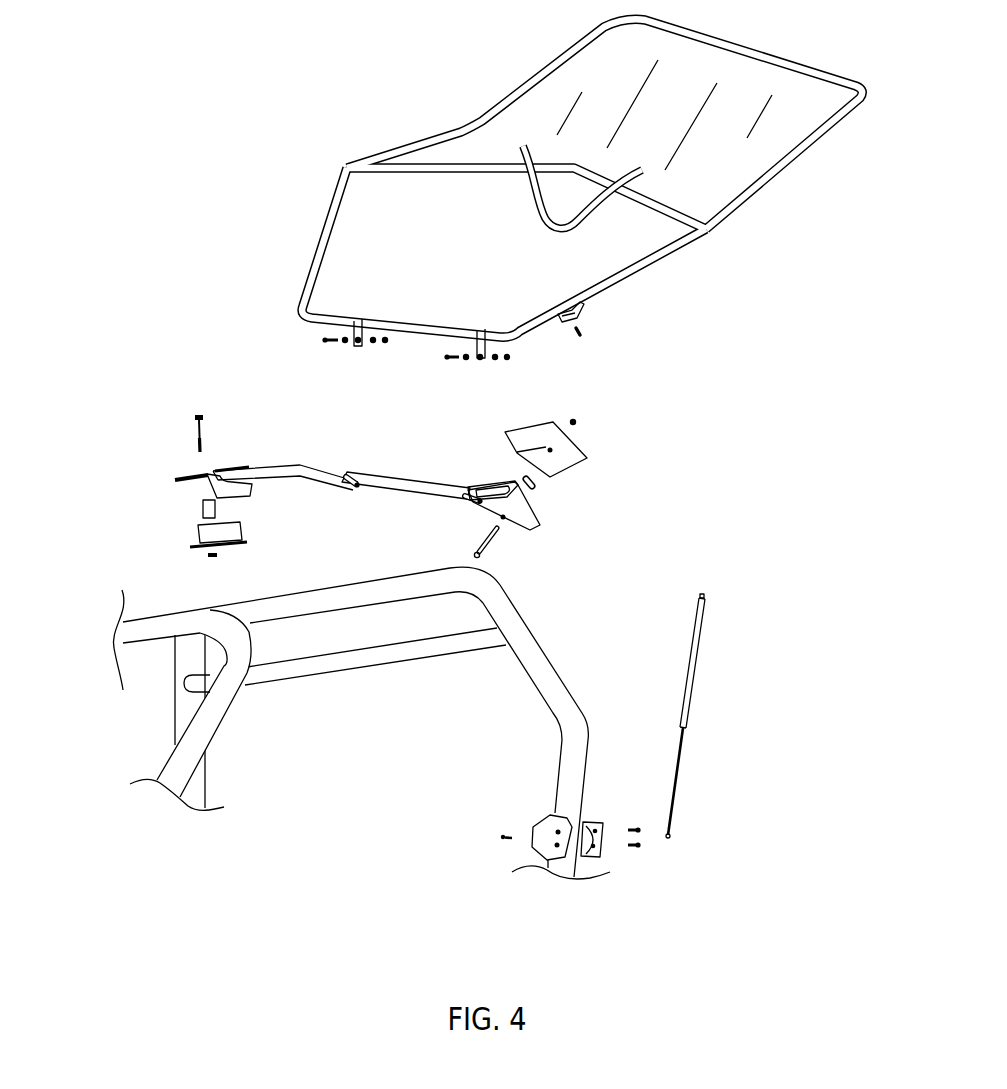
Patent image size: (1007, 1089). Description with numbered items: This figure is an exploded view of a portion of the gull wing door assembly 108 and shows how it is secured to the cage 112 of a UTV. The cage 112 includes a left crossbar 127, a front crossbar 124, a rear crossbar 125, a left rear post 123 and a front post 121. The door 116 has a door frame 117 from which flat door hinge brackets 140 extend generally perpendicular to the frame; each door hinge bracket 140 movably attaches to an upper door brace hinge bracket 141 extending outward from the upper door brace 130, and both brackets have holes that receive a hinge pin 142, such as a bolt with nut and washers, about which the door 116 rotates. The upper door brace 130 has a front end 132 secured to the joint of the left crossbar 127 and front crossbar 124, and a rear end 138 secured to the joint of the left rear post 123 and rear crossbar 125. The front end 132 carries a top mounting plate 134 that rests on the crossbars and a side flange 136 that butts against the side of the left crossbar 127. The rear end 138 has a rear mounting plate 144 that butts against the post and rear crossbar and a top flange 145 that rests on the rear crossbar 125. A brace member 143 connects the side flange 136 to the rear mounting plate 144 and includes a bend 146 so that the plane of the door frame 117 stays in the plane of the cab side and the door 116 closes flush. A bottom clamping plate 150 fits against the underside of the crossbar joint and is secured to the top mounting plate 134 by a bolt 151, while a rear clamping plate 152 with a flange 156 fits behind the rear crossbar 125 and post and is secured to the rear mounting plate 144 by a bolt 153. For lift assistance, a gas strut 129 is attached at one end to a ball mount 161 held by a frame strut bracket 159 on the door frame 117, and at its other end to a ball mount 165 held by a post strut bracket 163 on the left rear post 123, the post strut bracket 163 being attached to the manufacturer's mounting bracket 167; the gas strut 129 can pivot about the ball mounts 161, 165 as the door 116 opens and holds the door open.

The gull wing door assembly 108 is at (463, 482).
The cage 112 is at (362, 749).
The door 116 is at (545, 173).
The door frame 117 is at (328, 213).
The front post 121 is at (172, 773).
The left rear post 123 is at (566, 702).
The front crossbar 124 is at (133, 630).
The rear crossbar 125 is at (358, 676).
The left crossbar 127 is at (318, 601).
The gas strut 129 is at (697, 678).
The upper door brace 130 is at (370, 478).
The front end 132 is at (224, 461).
The top mounting plate 134 is at (193, 475).
The side flange 136 is at (230, 489).
The rear end 138 is at (470, 494).
The door hinge bracket 140 is at (356, 347).
The upper door brace hinge bracket 141 is at (350, 489).
The hinge pin 142 is at (326, 346).
The brace member 143 is at (397, 481).
The rear mounting plate 144 is at (541, 527).
The top flange 145 is at (490, 489).
The bend 146 is at (298, 469).
The bottom clamping plate 150 is at (188, 546).
The bolt 151 is at (196, 413).
The rear clamping plate 152 is at (559, 437).
The bolt 153 is at (491, 549).
The flange 156 is at (563, 471).
The frame strut bracket 159 is at (588, 311).
The ball mount 161 is at (585, 341).
The post strut bracket 163 is at (597, 858).
The ball mount 165 is at (498, 838).
The mounting bracket 167 is at (547, 848).